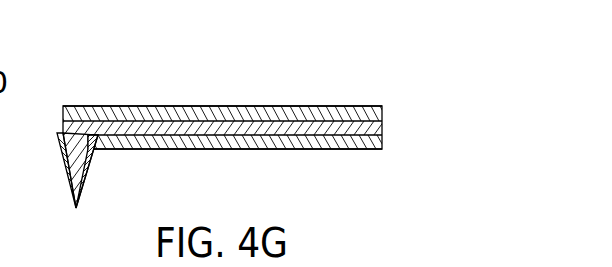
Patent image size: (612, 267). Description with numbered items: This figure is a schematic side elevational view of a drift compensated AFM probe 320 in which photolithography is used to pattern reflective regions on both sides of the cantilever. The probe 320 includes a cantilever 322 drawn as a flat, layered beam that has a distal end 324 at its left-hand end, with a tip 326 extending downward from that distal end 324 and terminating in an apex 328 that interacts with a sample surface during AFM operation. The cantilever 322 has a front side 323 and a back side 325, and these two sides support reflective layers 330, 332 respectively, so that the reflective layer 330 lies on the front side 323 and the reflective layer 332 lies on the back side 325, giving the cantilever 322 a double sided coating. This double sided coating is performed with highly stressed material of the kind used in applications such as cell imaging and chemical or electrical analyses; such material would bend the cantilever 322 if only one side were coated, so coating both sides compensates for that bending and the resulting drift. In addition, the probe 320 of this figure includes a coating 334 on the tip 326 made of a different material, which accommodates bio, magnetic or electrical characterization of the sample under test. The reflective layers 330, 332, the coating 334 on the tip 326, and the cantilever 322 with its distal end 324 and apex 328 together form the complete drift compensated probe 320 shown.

The probe 320 is at (348, 28).
The cantilever 322 is at (174, 126).
The front side 323 is at (342, 120).
The distal end 324 is at (96, 82).
The back side 325 is at (343, 136).
The tip 326 is at (92, 164).
The apex 328 is at (82, 183).
The reflective layer 330 is at (284, 118).
The reflective layer 332 is at (227, 145).
The coating 334 is at (69, 150).